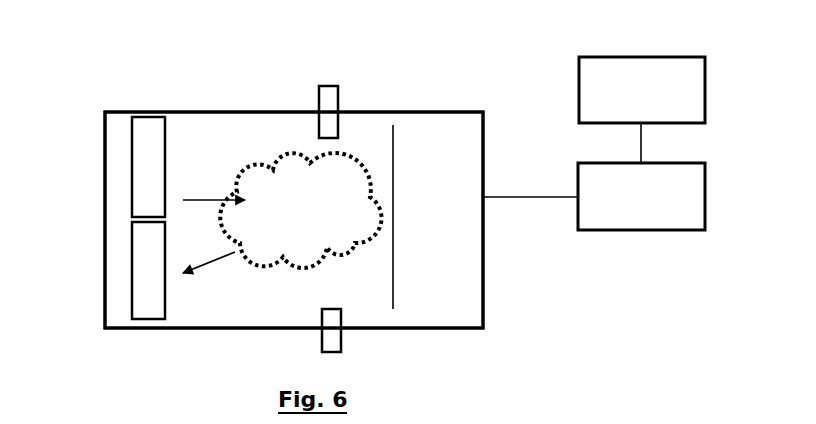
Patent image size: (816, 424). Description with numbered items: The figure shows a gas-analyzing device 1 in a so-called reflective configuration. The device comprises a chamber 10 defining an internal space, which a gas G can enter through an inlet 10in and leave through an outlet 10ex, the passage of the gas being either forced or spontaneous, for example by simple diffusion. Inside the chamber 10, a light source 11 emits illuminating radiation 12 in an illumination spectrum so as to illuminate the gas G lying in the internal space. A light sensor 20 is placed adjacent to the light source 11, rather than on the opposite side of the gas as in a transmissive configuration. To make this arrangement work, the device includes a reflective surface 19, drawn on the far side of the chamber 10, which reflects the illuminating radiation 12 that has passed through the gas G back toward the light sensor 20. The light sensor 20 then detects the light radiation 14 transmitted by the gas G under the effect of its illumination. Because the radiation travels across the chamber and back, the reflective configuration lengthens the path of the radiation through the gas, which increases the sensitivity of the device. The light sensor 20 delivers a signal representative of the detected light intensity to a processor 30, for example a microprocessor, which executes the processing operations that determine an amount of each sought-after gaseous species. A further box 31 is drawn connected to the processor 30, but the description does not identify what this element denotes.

The gas-analyzing device 1 is at (128, 60).
The chamber 10 is at (284, 331).
The inlet 10in is at (325, 106).
The outlet 10ex is at (333, 338).
The light source 11 is at (147, 132).
The illuminating radiation 12 is at (213, 198).
The light radiation 14 is at (208, 280).
The reflective surface 19 is at (398, 132).
The light sensor 20 is at (134, 278).
The processor 30 is at (628, 200).
The output unit 31 is at (635, 88).
The gas G is at (317, 188).